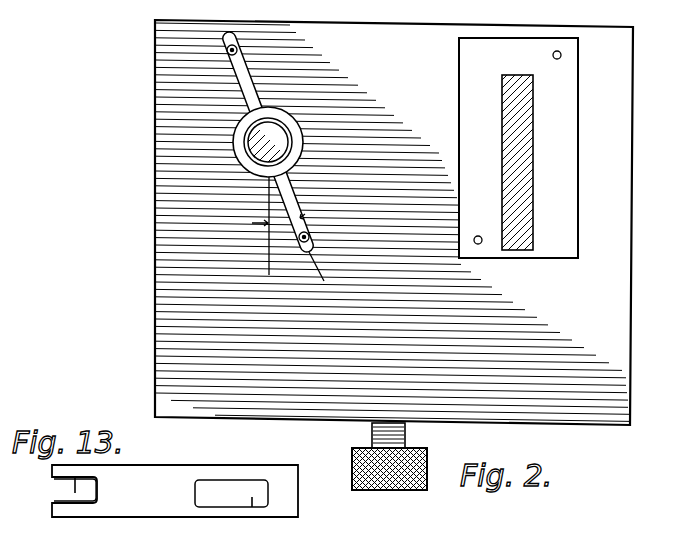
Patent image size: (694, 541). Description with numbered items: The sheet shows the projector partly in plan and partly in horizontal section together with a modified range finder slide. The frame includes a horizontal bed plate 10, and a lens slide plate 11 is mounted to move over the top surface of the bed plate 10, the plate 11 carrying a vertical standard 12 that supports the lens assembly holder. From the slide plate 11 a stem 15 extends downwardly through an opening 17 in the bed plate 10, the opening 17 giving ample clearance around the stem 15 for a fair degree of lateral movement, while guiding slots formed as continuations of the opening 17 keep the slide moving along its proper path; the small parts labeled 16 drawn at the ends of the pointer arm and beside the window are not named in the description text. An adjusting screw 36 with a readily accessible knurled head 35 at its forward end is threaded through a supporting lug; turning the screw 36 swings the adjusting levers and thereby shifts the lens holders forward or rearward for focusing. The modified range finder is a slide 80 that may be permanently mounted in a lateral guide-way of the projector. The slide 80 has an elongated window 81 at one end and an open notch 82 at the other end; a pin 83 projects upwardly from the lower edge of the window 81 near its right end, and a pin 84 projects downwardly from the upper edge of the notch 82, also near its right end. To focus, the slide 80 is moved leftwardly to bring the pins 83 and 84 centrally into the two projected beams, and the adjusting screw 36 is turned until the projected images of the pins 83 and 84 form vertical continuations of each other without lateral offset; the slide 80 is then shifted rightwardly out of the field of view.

In FIG. 2, the bed plate 10 is at (620, 372).
In FIG. 2, the lens slide plate 11 is at (567, 258).
In FIG. 2, the vertical standard 12 is at (533, 205).
In FIG. 2, the stem 15 is at (257, 152).
In FIG. 2, the pin 16 is at (228, 54).
In FIG. 2, the opening 17 is at (304, 142).
In FIG. 2, the knurled head 35 is at (428, 476).
In FIG. 2, the adjusting screw 36 is at (407, 433).
In FIG. 13, the slide 80 is at (278, 472).
In FIG. 13, the elongated window 81 is at (194, 494).
In FIG. 13, the open notch 82 is at (95, 492).
In FIG. 13, the pin 83 is at (250, 500).
In FIG. 13, the pin 84 is at (67, 490).